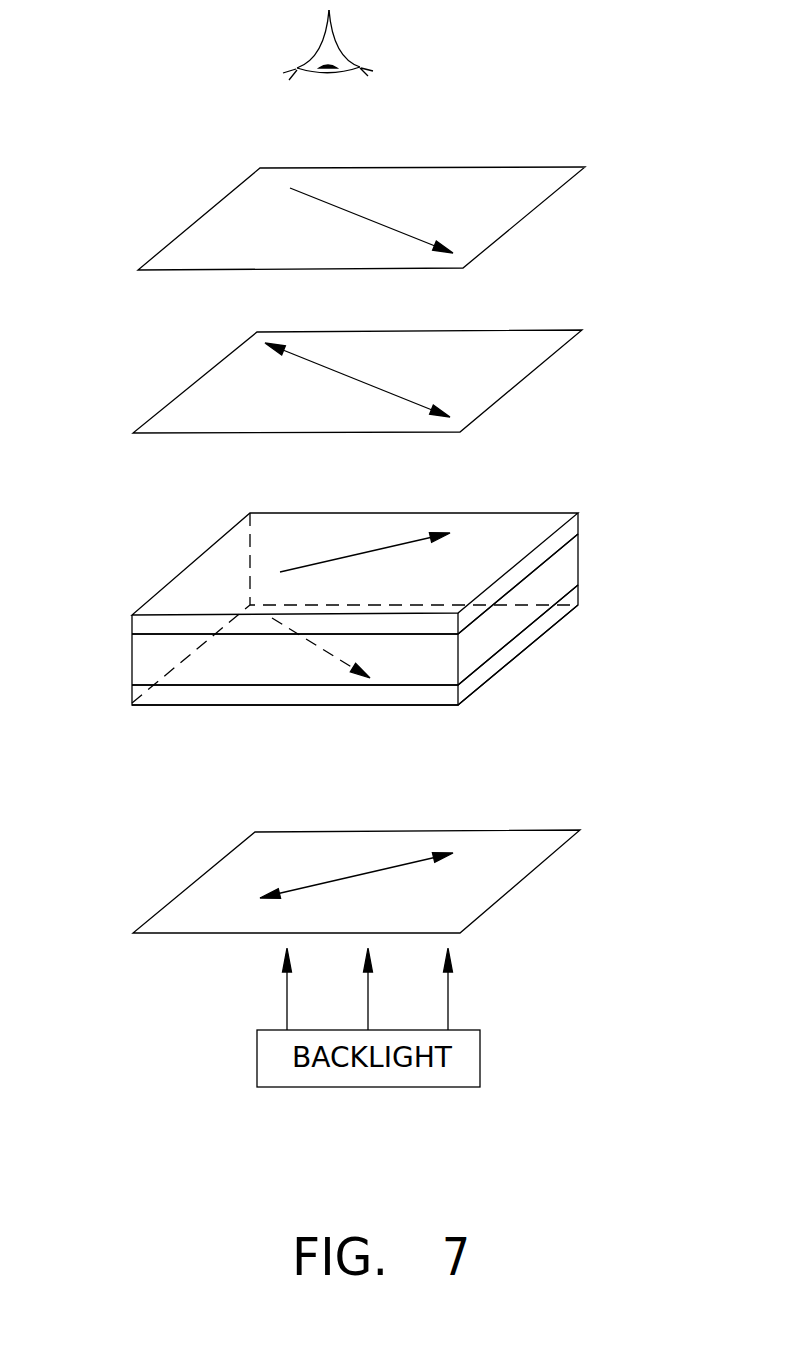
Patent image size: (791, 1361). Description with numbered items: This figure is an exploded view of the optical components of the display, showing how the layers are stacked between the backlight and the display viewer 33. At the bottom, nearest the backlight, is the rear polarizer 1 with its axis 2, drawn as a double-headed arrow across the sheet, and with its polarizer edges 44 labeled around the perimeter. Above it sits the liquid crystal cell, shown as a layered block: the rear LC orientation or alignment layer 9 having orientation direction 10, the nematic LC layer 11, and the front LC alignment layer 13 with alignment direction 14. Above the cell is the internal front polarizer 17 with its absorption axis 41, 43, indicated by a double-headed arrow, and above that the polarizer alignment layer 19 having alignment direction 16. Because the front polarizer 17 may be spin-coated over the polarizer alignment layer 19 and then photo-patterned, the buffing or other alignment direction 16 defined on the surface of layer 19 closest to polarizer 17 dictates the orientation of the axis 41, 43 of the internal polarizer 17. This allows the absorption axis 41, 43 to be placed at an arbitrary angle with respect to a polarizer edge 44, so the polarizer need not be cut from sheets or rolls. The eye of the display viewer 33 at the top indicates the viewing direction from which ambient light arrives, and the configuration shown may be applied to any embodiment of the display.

The display viewer 33 is at (348, 50).
The polarizer alignment layer 19 is at (483, 202).
The alignment direction 16 is at (345, 208).
The front polarizer 17 is at (480, 370).
The alignment direction 14 is at (388, 409).
The absorption axis 41 is at (345, 377).
The absorption axis 43 is at (247, 416).
The front LC alignment layer 13 is at (165, 625).
The nematic LC layer 11 is at (148, 665).
The rear LC alignment layer 9 is at (432, 693).
The orientation direction 10 is at (310, 642).
The rear polarizer 1 is at (360, 891).
The polarizer edge 44 is at (392, 830).
The axis 2 is at (357, 873).